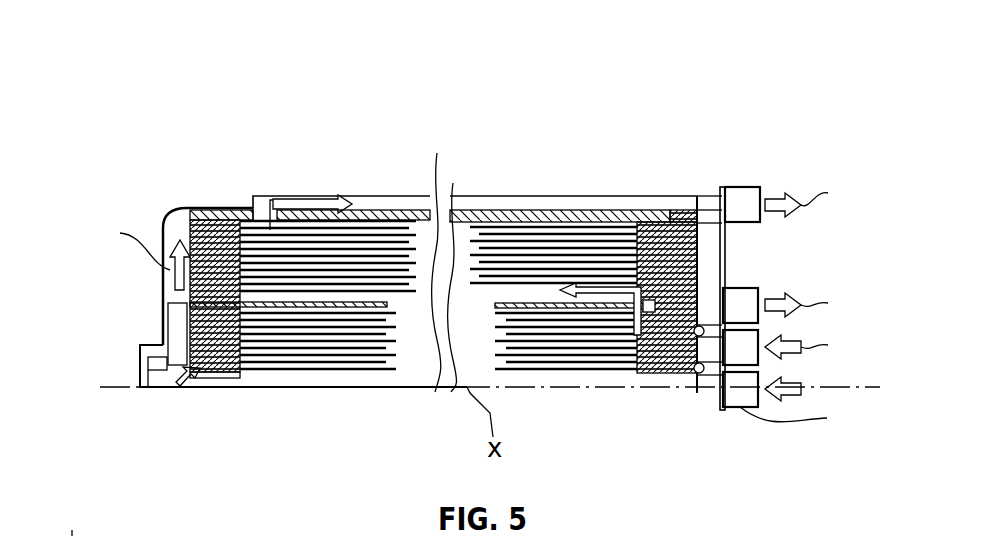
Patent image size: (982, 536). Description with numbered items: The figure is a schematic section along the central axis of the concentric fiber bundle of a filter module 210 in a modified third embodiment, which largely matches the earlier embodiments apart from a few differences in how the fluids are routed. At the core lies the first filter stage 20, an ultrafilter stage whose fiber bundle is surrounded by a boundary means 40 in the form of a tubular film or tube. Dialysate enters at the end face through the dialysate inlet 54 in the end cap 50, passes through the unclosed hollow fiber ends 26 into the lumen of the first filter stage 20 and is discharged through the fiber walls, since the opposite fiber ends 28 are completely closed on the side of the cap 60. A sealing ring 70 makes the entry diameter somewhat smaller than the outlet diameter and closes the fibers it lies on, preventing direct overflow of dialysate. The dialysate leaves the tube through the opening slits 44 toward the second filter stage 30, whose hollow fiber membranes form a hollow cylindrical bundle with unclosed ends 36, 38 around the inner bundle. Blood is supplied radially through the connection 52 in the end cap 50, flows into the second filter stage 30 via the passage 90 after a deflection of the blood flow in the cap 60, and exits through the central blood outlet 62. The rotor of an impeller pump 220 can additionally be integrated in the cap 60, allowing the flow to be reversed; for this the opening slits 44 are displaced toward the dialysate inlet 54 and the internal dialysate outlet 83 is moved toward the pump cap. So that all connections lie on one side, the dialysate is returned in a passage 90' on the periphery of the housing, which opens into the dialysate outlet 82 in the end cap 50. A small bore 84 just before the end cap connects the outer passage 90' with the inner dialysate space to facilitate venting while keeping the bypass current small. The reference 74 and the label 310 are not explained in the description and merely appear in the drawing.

The filter module 210 is at (157, 128).
The first filter stage 20 is at (400, 345).
The end of fiber bundle 38 is at (223, 217).
The internal dialysate outlet 83 is at (257, 200).
The passage 90' is at (353, 169).
The bore 84 is at (650, 200).
The second filter stage 30 is at (437, 153).
The end of fiber bundle 36 is at (670, 212).
The sealing ring 70 is at (700, 325).
The dialysate outlet 82 is at (740, 187).
The end cap 50 is at (726, 238).
The blood outlet 62 is at (745, 288).
The dialysate inlet 54 is at (758, 362).
The blood connection 52 is at (745, 407).
The cap 60 is at (157, 323).
The impeller pump 220 is at (167, 380).
The closed fiber ends 28 is at (220, 363).
The passage 90 is at (328, 342).
The boundary means 40 is at (492, 307).
The opening slits 44 is at (640, 337).
The unclosed fiber ends 26 is at (680, 362).
The second opening 74 is at (700, 375).
The battery system 310 is at (70, 519).